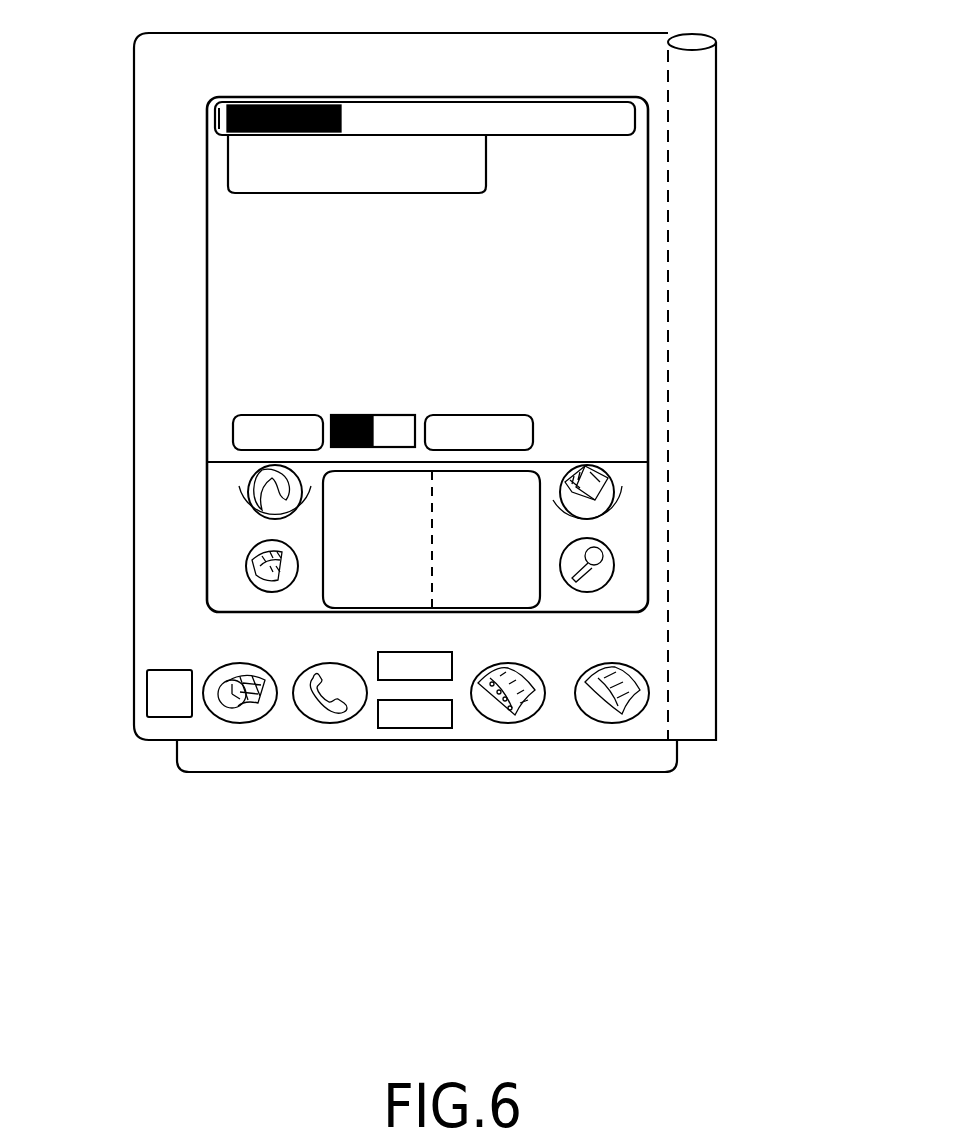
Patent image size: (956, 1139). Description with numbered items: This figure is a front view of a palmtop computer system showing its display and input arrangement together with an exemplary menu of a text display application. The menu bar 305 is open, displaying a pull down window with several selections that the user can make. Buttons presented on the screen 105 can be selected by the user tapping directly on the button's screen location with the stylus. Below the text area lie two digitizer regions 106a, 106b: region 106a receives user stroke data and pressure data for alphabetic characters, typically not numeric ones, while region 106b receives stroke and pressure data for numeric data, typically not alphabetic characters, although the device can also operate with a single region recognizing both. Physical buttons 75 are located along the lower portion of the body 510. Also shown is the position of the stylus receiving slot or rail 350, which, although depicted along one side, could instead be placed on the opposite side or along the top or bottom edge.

The menu bar 305 is at (407, 106).
The stylus receiving slot or rail 350 is at (702, 153).
The screen 105 is at (610, 441).
The digitizer region 106a is at (350, 537).
The digitizer region 106b is at (510, 537).
The physical buttons 75 is at (607, 665).
The handheld computer housing 510 is at (476, 402).